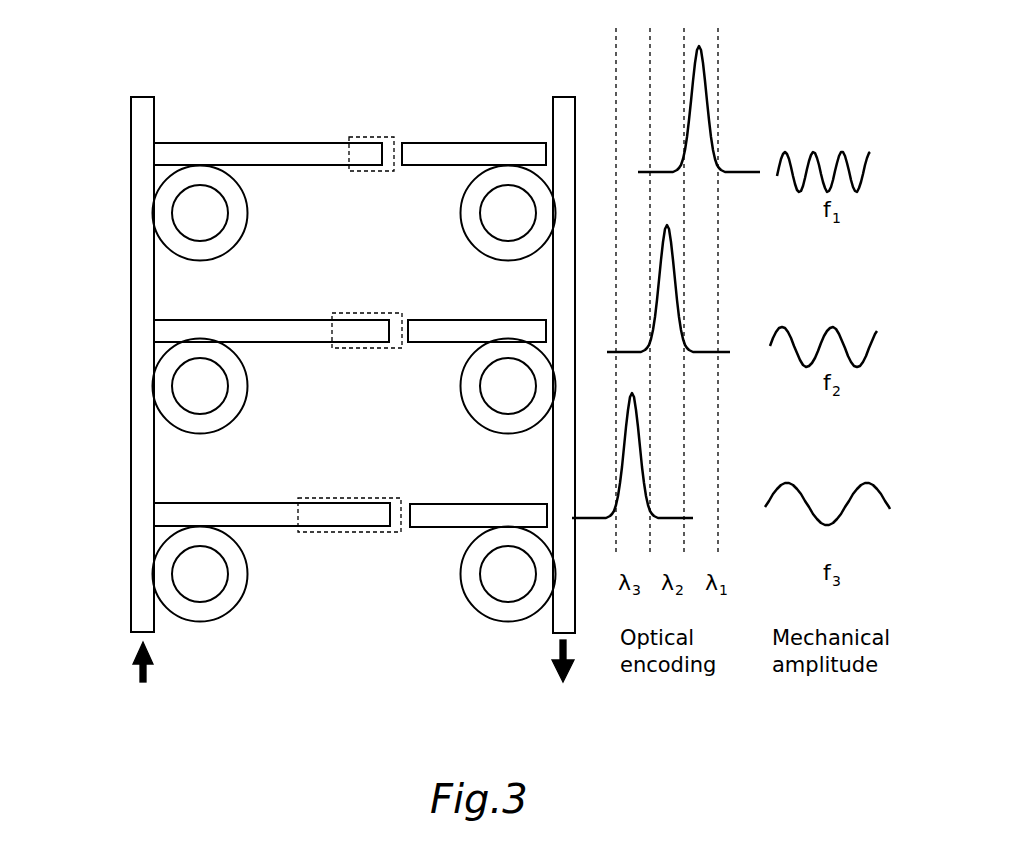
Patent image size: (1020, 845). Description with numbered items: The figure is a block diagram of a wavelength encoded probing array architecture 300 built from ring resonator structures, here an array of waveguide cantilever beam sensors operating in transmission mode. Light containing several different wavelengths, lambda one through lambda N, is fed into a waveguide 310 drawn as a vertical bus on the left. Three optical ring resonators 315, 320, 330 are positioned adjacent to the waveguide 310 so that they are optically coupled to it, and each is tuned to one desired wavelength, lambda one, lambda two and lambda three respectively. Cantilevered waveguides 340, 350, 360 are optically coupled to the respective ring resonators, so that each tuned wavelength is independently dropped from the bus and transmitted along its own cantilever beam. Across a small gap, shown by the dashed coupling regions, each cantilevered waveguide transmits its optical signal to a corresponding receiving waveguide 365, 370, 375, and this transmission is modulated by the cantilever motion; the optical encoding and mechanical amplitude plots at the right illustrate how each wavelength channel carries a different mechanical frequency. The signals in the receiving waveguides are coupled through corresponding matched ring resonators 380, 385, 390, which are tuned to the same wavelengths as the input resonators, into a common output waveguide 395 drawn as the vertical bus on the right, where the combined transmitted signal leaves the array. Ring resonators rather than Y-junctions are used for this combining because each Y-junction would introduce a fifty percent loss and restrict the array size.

The wavelength encoded probing array architecture 300 is at (118, 58).
The waveguide 310 is at (138, 610).
The optical ring resonator 315 is at (232, 235).
The optical ring resonator 320 is at (230, 413).
The optical ring resonator 330 is at (167, 543).
The cantilevered waveguide 340 is at (182, 152).
The cantilevered waveguide 350 is at (182, 330).
The cantilevered waveguide 360 is at (182, 513).
The receiving waveguide 365 is at (415, 152).
The receiving waveguide 370 is at (418, 330).
The receiving waveguide 375 is at (423, 513).
The matched ring resonator 380 is at (467, 227).
The matched ring resonator 385 is at (467, 406).
The matched ring resonator 390 is at (480, 603).
The output waveguide 395 is at (573, 603).